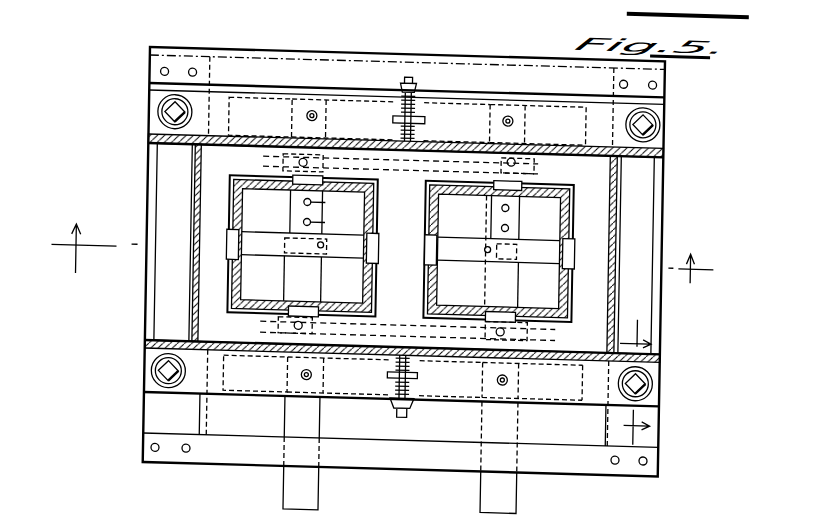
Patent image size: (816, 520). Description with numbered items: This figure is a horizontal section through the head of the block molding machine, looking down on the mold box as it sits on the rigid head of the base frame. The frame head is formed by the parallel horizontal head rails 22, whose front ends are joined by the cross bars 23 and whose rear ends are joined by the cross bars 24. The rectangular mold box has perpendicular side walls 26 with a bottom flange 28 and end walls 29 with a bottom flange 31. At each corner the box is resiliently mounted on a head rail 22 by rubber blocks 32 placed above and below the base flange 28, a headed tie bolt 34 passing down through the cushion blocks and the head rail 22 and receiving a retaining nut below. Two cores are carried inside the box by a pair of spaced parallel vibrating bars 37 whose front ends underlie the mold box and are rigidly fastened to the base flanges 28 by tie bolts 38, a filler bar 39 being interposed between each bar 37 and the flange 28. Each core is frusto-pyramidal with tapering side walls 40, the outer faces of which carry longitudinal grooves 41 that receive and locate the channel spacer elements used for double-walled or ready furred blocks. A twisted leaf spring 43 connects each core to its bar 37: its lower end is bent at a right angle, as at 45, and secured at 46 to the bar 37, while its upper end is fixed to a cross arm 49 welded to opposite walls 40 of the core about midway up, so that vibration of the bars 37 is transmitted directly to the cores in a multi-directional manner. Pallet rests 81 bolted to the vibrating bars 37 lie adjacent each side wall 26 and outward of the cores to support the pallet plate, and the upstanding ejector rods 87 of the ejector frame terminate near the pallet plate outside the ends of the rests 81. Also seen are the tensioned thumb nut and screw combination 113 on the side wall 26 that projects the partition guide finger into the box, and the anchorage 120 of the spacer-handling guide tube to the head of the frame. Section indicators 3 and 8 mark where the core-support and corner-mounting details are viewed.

The head rail 22 is at (161, 187).
The cross bar 23 is at (348, 64).
The cross bar 24 is at (405, 450).
The side wall 26 is at (357, 141).
The bottom flange 28 is at (454, 116).
The end wall 29 is at (201, 300).
The bottom flange 31 is at (175, 173).
The rubber block 32 is at (158, 108).
The tie bolt 34 is at (168, 116).
The vibrating bar 37 is at (296, 488).
The tie bolt 38 is at (313, 105).
The filler bar 39 is at (256, 97).
The core side wall 40 is at (435, 195).
The groove 41 is at (517, 175).
The leaf spring 43 is at (321, 263).
The right-angle bend 45 is at (303, 206).
The securing point 46 is at (500, 203).
The cross arm 49 is at (458, 235).
The pallet rest 81 is at (403, 310).
The ejector rod 87 is at (580, 321).
The thumb nut and screw combination 113 is at (391, 257).
The anchorage of guide tube 120 is at (415, 230).
The section line 3 is at (372, 268).
The section line 8 is at (631, 373).